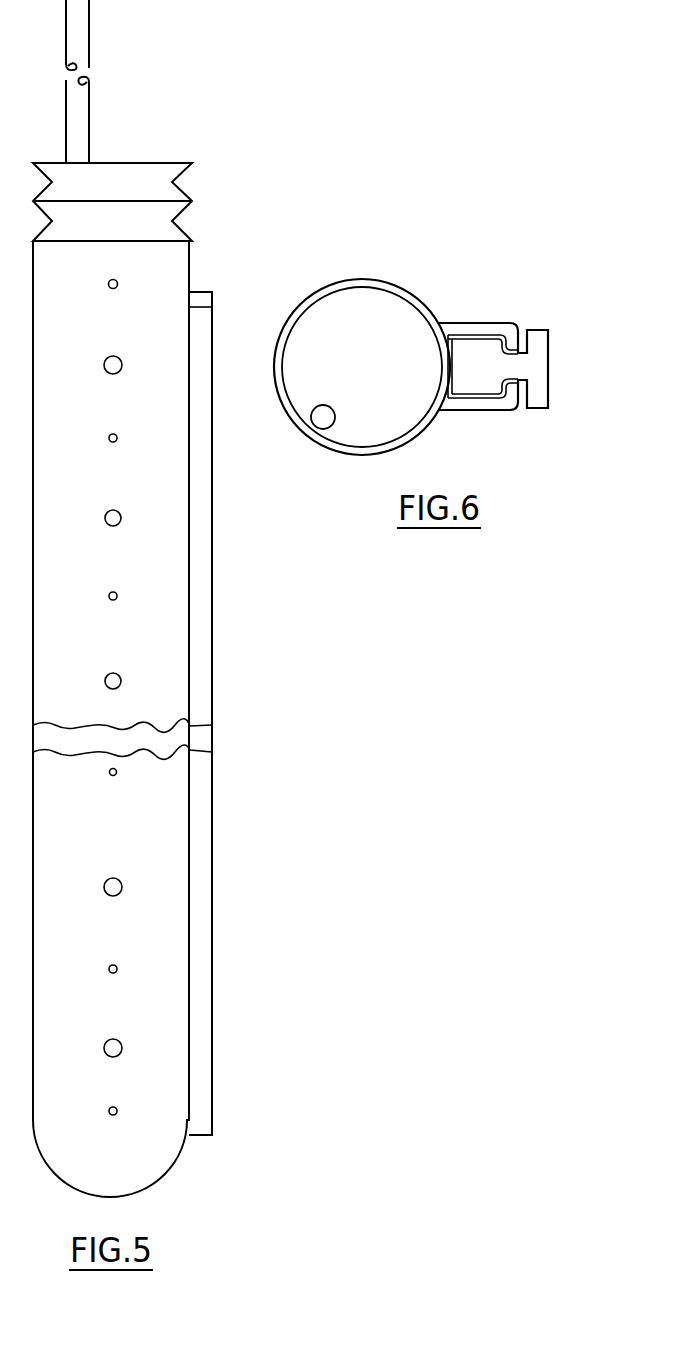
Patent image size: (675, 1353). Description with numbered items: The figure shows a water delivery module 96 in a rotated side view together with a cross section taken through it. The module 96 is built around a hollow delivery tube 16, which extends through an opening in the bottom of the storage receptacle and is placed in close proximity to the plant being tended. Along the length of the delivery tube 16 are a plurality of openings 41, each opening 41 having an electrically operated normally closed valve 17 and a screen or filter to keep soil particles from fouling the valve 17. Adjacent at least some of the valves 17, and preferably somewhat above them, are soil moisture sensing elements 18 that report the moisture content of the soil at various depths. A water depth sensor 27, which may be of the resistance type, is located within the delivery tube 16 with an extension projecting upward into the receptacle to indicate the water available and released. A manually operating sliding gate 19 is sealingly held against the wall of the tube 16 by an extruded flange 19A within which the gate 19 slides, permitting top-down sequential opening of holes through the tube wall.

In FIG. 5, the hollow delivery tube 16 is at (159, 163).
In FIG. 5, the electrically operated normally closed valve 17 is at (121, 686).
In FIG. 5, the soil moisture sensing element 18 is at (117, 772).
In FIG. 5, the manually operating sliding gate 19 is at (211, 291).
In FIG. 6, the manually operating sliding gate 19 is at (540, 400).
In FIG. 5, the extruded flange 19A is at (202, 546).
In FIG. 6, the extruded flange 19A is at (495, 326).
In FIG. 5, the water depth sensor 27 is at (89, 43).
In FIG. 6, the water depth sensor 27 is at (335, 415).
In FIG. 5, the opening 41 is at (121, 519).
In FIG. 5, the water delivery module 96 is at (240, 890).